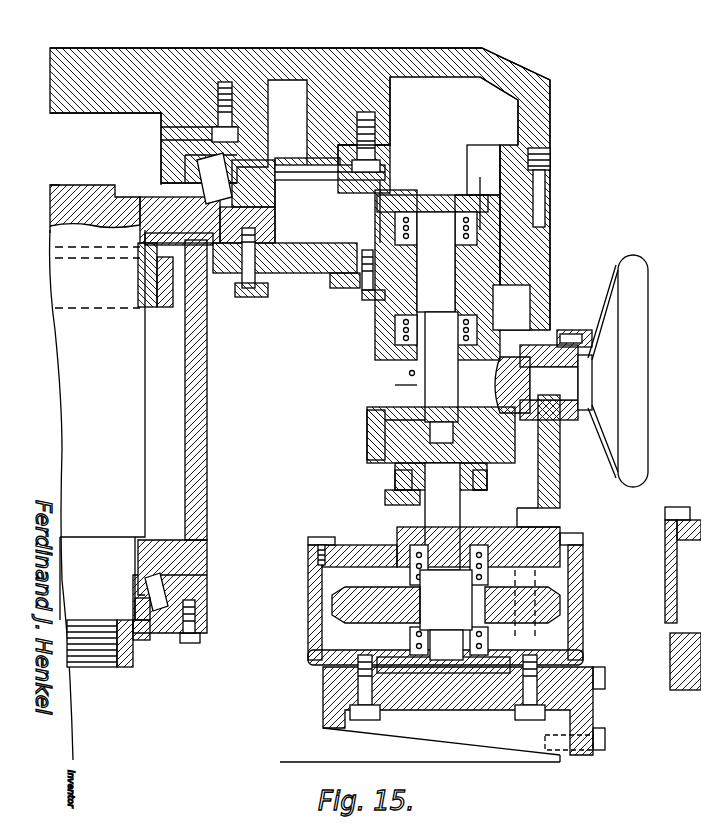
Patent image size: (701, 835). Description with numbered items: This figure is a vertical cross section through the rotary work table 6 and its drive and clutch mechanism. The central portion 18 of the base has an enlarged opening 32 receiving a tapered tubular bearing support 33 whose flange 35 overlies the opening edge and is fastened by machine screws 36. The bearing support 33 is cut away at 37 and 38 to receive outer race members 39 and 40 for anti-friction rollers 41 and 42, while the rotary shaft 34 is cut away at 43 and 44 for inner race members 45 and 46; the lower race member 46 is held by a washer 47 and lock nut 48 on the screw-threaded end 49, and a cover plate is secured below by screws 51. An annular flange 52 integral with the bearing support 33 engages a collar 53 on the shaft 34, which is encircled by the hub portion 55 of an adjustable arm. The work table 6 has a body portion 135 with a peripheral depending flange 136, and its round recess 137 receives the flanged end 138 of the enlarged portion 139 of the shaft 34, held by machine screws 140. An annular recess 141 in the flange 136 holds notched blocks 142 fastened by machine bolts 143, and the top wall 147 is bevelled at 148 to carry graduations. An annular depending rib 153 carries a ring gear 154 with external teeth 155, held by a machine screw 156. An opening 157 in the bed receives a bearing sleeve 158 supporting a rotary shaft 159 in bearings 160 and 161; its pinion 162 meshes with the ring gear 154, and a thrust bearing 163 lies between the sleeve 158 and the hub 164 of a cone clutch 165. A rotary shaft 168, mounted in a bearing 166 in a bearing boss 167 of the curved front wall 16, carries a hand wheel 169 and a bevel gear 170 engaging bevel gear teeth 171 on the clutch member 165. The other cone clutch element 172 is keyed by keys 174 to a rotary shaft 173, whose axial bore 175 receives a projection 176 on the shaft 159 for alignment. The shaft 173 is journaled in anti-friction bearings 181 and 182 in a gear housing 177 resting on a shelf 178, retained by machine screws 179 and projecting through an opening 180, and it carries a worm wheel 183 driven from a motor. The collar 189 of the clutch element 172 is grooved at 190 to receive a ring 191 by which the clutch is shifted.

The rotary work table 6 is at (558, 109).
The arcuately curved front wall 16 is at (560, 470).
The central portion of the base 18 is at (307, 265).
The enlarged opening 32 is at (222, 280).
The bearing support 33 is at (206, 440).
The rotary shaft 34 is at (132, 416).
The flange 35 is at (276, 229).
The machine screws 36 is at (256, 298).
The upper cut away portion 37 is at (265, 205).
The lower cut away portion 38 is at (195, 573).
The antifriction race member 39 is at (262, 175).
The antifriction race member 40 is at (205, 590).
The anti-friction rollers 41 is at (214, 178).
The anti-friction rollers 42 is at (162, 640).
The cut away portion of shaft 43 is at (166, 149).
The cut away portion of shaft 44 is at (140, 578).
The inner race member 45 is at (166, 168).
The inner race member 46 is at (135, 600).
The washer 47 is at (143, 640).
The lock nut 48 is at (125, 667).
The screw-threaded end 49 is at (85, 660).
The screws 51 is at (178, 645).
The annular flange 52 is at (206, 312).
The collar 53 is at (148, 308).
The hub portion 55 is at (165, 308).
The body portion 135 is at (62, 88).
The peripheral depending flange 136 is at (548, 141).
The round recess 137 is at (50, 124).
The flanged end 138 is at (165, 121).
The enlarged portion 139 is at (113, 184).
The machine screws 140 is at (170, 134).
The annular recess 141 is at (486, 150).
The blocks 142 is at (548, 166).
The machine bolts 143 is at (545, 191).
The top wall 147 is at (50, 50).
The bevel 148 is at (535, 64).
The annular depending rib 153 is at (390, 94).
The ring gear 154 is at (342, 182).
The external teeth 155 is at (372, 140).
The machine screw 156 is at (412, 97).
The opening 157 is at (372, 292).
The bearing sleeve 158 is at (385, 305).
The rotary shaft 159 is at (436, 262).
The bearing 160 is at (470, 202).
The bearing 161 is at (478, 325).
The pinion 162 is at (480, 150).
The thrust bearing 163 is at (409, 374).
The hub 164 is at (415, 390).
The cone clutch 165 is at (367, 430).
The bearing 166 is at (570, 330).
The bearing boss 167 is at (590, 335).
The rotary shaft 168 is at (561, 382).
The hand wheel 169 is at (636, 350).
The bevel gear 170 is at (510, 360).
The bevel gear teeth 171 is at (372, 408).
The cone clutch element 172 is at (395, 473).
The rotary shaft 173 is at (425, 520).
The keys 174 is at (395, 500).
The axial bore 175 is at (372, 448).
The projection 176 is at (437, 425).
The gear housing 177 is at (583, 585).
The shelf 178 is at (420, 712).
The machine screws 179 is at (380, 716).
The opening 180 is at (522, 520).
The anti-friction bearing 181 is at (395, 540).
The anti-friction bearing 182 is at (410, 640).
The worm wheel 183 is at (332, 606).
The collar 189 is at (395, 485).
The groove 190 is at (488, 489).
The ring 191 is at (488, 481).